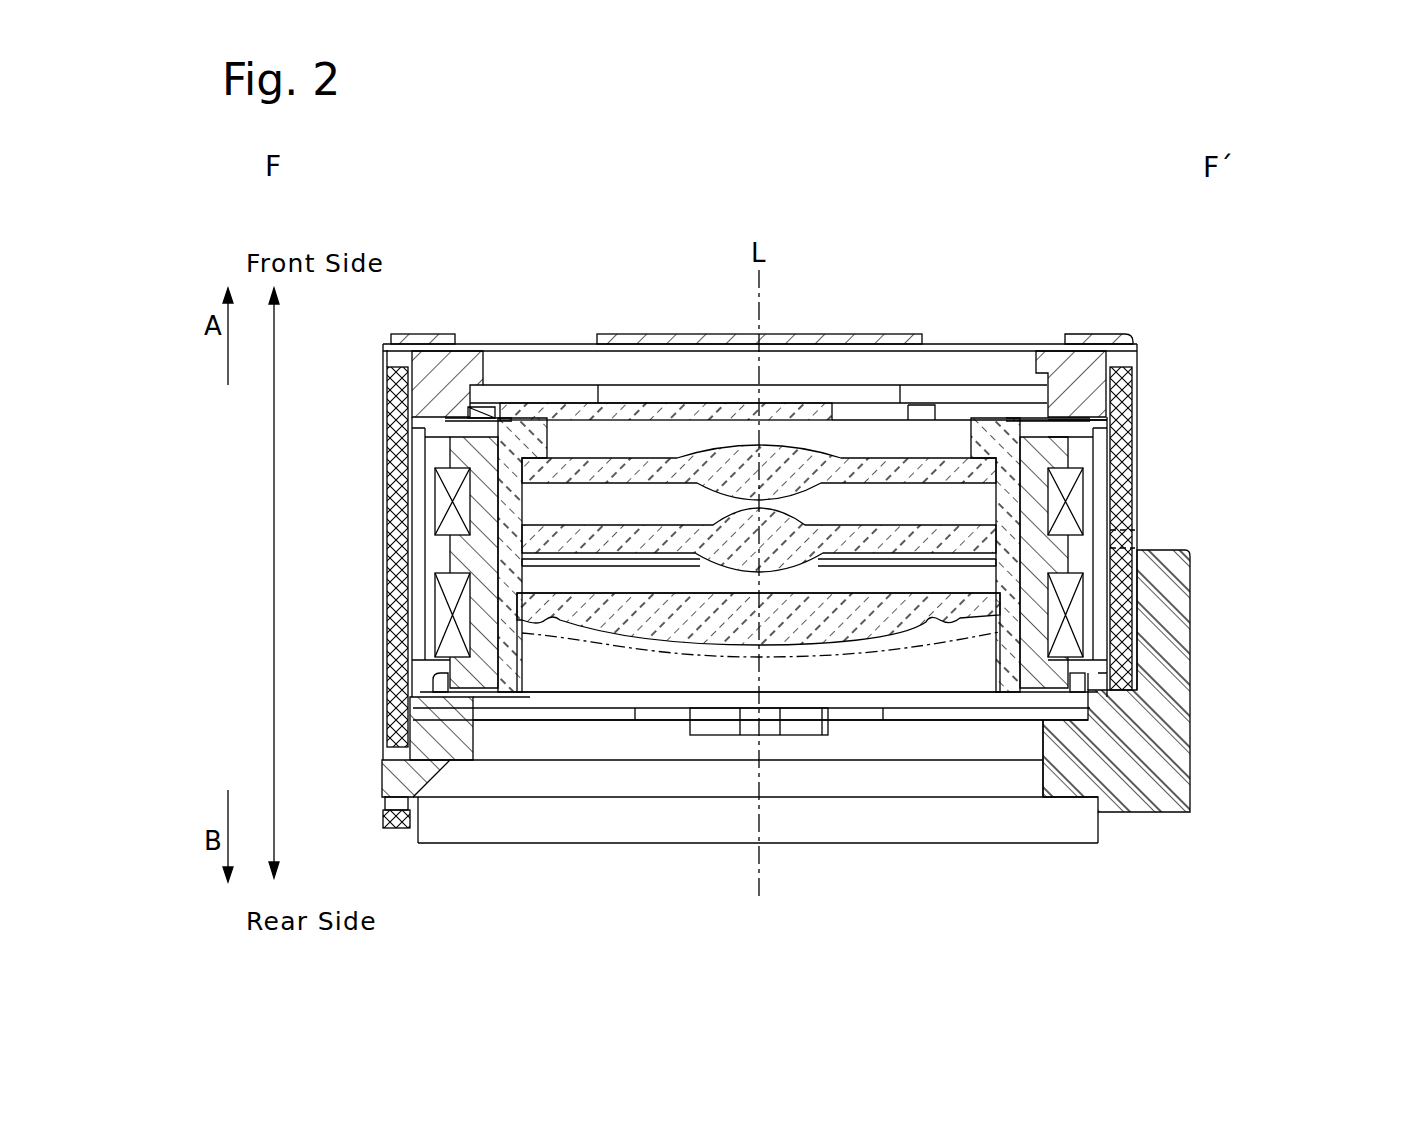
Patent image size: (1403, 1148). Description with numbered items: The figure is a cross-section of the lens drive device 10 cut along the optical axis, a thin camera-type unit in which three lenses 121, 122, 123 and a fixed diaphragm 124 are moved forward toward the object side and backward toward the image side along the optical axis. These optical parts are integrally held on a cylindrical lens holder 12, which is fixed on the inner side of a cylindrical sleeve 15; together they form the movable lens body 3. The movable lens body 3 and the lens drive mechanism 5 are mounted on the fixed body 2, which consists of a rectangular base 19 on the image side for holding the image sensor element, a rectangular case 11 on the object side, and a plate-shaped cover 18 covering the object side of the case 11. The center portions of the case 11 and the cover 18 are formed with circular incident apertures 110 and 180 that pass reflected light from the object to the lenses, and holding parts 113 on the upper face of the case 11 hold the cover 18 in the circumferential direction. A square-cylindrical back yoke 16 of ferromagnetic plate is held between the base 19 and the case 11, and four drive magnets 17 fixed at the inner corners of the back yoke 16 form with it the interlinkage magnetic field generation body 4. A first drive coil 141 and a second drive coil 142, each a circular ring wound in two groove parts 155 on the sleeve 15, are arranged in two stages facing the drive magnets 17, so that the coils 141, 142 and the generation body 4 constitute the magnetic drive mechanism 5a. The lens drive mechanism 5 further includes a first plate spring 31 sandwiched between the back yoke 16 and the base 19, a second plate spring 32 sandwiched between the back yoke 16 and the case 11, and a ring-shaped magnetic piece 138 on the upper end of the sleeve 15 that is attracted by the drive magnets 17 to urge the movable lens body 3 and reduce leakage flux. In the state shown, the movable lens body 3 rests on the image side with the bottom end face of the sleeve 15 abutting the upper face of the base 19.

The lens drive device 10 is at (1020, 188).
The case 11 is at (395, 375).
The incident aperture 110 is at (1018, 357).
The incident aperture 180 is at (943, 347).
The holding parts 113 is at (813, 335).
The plate-shaped cover 18 is at (426, 362).
The magnetic piece 138 is at (452, 420).
The back yoke 16 is at (392, 480).
The fixed body 2 is at (318, 352).
The second drive coil 142 is at (1080, 500).
The first drive coil 141 is at (1075, 645).
The lens holder 12 is at (1003, 645).
The lens 121 is at (727, 486).
The lens 122 is at (748, 555).
The fixed diaphragm 124 is at (847, 561).
The lens 123 is at (807, 630).
The sleeve 15 is at (1032, 660).
The base 19 is at (405, 745).
The first plate spring 31 is at (1095, 688).
The second plate spring 32 is at (1102, 425).
The groove parts 155 is at (1060, 462).
The drive magnets 17 is at (1135, 550).
The interlinkage magnetic field generation body 4 is at (1243, 493).
The magnetic drive mechanism 5a is at (1283, 447).
The lens drive mechanism 5 is at (1328, 410).
The movable lens body 3 is at (565, 947).